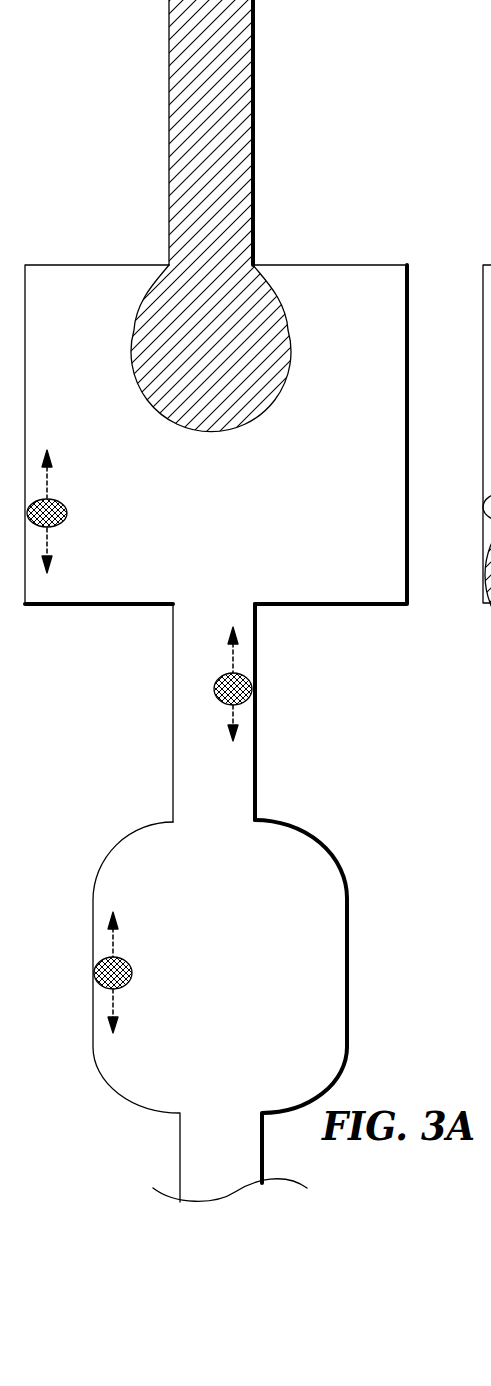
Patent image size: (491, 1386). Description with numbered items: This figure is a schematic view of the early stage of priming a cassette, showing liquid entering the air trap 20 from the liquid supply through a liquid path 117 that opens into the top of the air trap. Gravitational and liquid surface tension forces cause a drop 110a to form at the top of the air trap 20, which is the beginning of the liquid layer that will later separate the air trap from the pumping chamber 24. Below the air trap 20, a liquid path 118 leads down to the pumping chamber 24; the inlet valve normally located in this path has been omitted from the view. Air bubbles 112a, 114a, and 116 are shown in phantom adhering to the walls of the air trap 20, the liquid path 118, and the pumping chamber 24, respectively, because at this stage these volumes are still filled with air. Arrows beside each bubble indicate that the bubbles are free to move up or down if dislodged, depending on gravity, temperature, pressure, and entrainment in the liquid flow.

The liquid path 117 is at (255, 80).
The drop 110a is at (293, 357).
The air trap 20 is at (340, 265).
The air bubble 112a is at (65, 510).
The air bubble 114a is at (254, 689).
The liquid path 118 is at (256, 783).
The pumping chamber 24 is at (295, 833).
The air bubble 116 is at (130, 965).